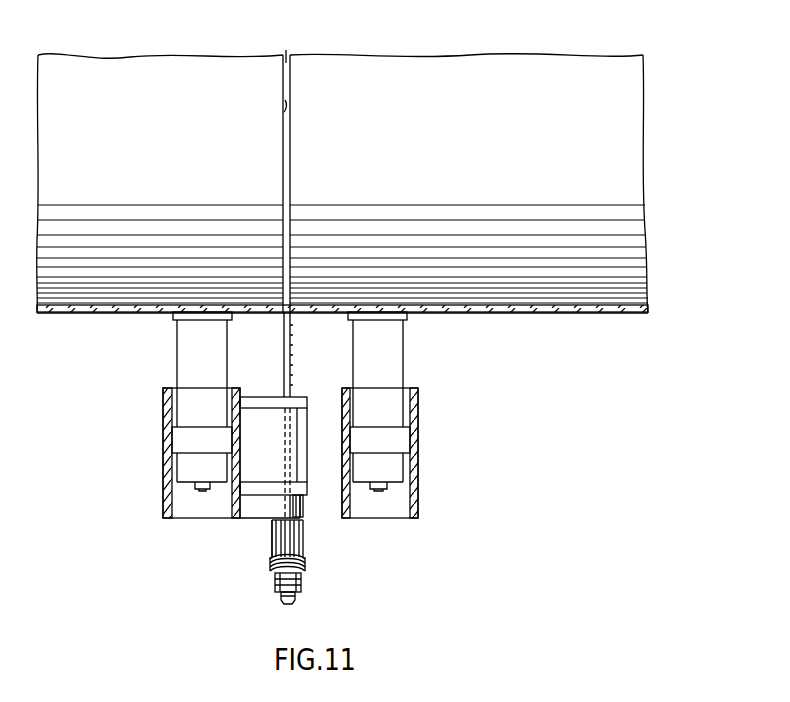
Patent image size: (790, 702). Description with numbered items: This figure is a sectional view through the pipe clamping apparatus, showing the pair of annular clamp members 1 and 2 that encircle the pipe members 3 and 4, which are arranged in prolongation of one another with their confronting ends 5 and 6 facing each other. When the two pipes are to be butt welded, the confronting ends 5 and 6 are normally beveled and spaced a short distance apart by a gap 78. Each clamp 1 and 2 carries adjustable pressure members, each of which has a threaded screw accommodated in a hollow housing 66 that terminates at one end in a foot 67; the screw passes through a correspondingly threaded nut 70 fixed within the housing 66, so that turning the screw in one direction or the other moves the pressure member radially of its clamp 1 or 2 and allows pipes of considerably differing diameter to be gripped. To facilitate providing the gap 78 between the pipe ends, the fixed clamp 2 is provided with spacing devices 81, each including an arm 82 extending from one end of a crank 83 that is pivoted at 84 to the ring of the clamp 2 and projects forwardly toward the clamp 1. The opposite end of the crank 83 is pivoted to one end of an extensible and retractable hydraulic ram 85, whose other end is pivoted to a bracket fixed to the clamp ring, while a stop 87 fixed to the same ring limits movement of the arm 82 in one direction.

The annular clamp member 1 is at (421, 399).
The annular clamp member 2 is at (156, 488).
The pipe member 3 is at (565, 313).
The pipe member 4 is at (75, 314).
The confronting end 5 is at (283, 72).
The confronting end 6 is at (283, 104).
The hollow housing 66 is at (178, 362).
The foot 67 is at (180, 320).
The nut 70 is at (178, 440).
The gap 78 is at (286, 50).
The spacing device 81 is at (266, 560).
The arm 82 is at (291, 359).
The crank 83 is at (288, 604).
The pivot 84 is at (296, 500).
The hydraulic ram 85 is at (308, 533).
The stop 87 is at (263, 402).